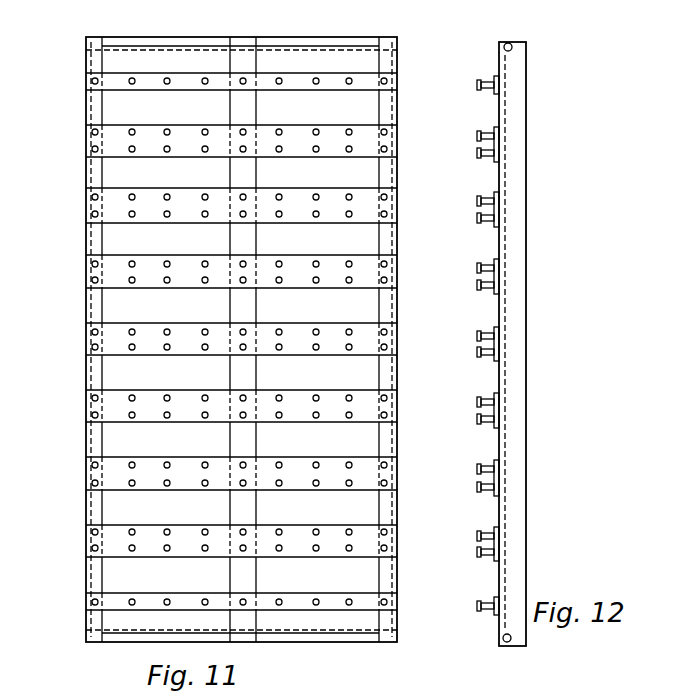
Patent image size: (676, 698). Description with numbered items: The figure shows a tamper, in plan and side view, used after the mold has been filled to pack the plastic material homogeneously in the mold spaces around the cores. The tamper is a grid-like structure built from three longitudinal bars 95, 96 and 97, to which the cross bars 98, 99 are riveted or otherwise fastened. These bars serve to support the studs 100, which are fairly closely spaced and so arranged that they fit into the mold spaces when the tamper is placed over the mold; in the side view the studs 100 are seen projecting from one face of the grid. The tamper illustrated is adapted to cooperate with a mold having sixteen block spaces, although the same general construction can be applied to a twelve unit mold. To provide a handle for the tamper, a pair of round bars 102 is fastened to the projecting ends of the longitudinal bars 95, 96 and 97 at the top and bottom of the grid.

In FIG. 11, the longitudinal bar 95 is at (392, 368).
In FIG. 12, the longitudinal bar 95 is at (510, 310).
In FIG. 11, the longitudinal bar 96 is at (257, 383).
In FIG. 11, the longitudinal bar 97 is at (98, 368).
In FIG. 11, the cross bar 98 is at (337, 538).
In FIG. 11, the cross bar 99 is at (372, 80).
In FIG. 11, the stud 100 is at (318, 218).
In FIG. 12, the stud 100 is at (478, 400).
In FIG. 11, the round bar 102 is at (350, 45).